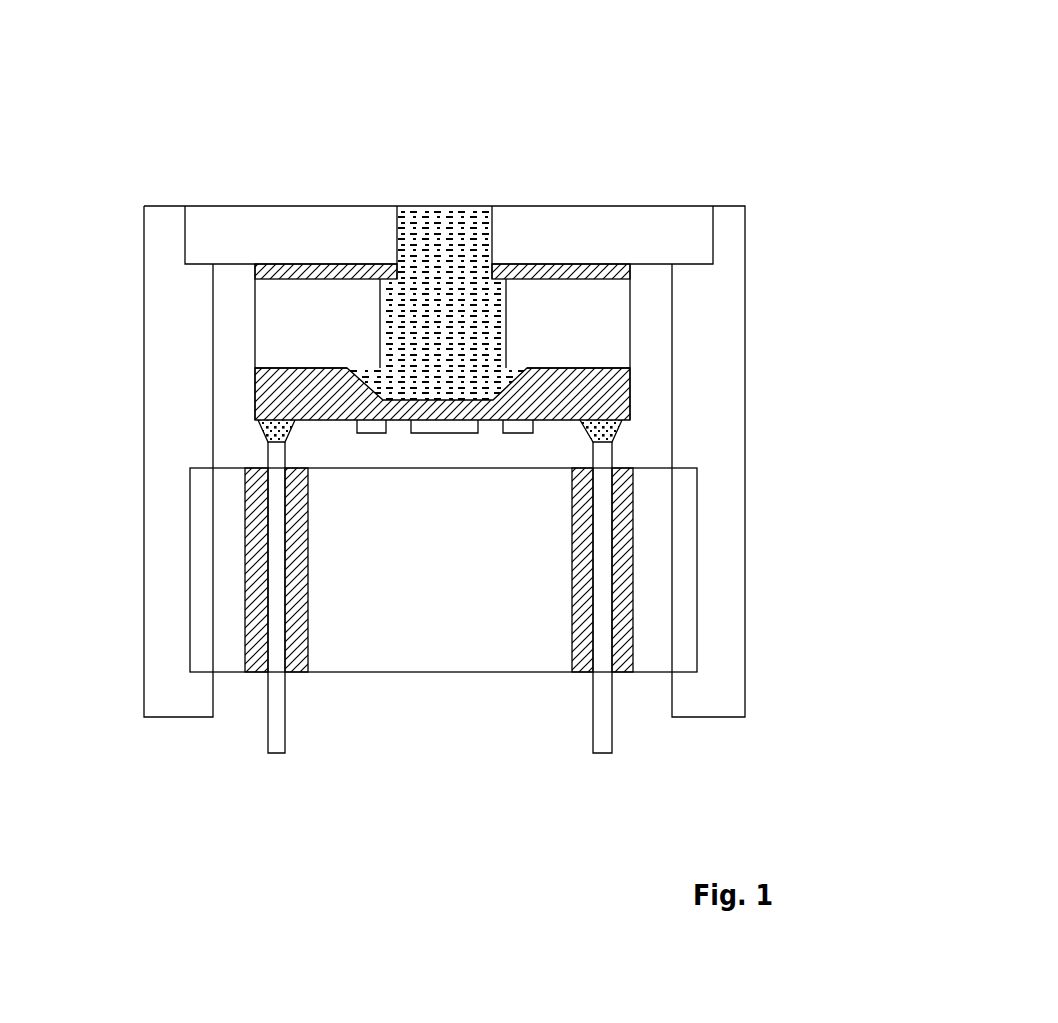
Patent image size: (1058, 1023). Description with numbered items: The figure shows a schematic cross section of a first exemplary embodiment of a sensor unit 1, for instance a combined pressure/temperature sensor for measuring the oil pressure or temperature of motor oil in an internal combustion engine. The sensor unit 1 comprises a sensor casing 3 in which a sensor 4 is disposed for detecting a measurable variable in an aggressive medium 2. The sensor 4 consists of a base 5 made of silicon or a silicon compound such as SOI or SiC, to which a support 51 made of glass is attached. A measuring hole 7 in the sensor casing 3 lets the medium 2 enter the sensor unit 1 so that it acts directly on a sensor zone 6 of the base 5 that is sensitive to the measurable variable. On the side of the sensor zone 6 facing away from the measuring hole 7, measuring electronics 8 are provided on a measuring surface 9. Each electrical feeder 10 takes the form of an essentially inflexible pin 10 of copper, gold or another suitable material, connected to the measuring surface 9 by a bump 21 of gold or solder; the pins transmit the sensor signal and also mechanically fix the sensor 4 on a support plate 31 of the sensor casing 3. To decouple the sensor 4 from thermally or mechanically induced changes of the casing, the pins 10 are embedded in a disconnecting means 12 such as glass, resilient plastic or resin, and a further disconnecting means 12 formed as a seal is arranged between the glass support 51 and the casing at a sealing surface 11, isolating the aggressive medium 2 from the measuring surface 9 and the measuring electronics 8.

The sensor unit 1 is at (580, 136).
The medium 2 is at (425, 312).
The sensor casing 3 is at (784, 727).
The sensor 4 is at (130, 265).
The base 5 is at (255, 405).
The support 51 is at (561, 332).
The sensor zone 6 is at (443, 433).
The measuring hole 7 is at (450, 222).
The measuring electronics 8 is at (372, 433).
The measuring surface 9 is at (350, 443).
The electrical feeder 10 is at (282, 747).
The sealing surface 11 is at (277, 270).
The disconnecting means 12 is at (590, 263).
The bump 21 is at (622, 427).
The support plate 31 is at (397, 652).